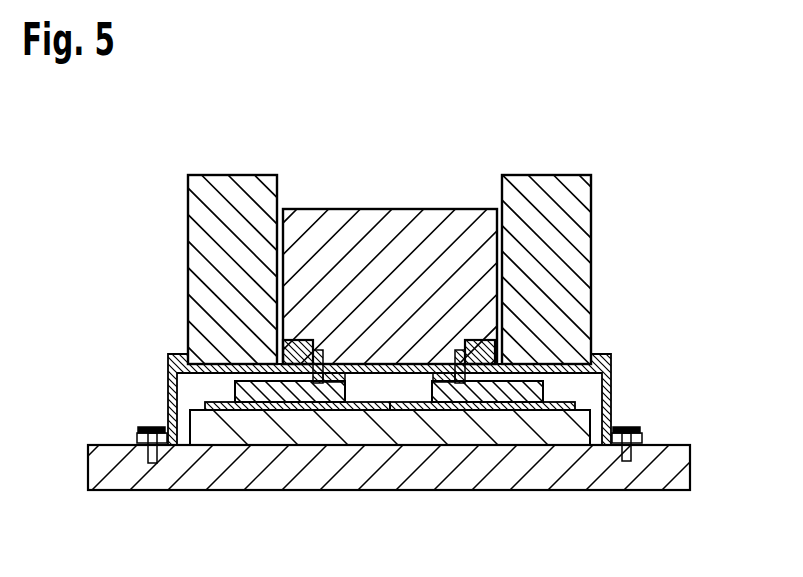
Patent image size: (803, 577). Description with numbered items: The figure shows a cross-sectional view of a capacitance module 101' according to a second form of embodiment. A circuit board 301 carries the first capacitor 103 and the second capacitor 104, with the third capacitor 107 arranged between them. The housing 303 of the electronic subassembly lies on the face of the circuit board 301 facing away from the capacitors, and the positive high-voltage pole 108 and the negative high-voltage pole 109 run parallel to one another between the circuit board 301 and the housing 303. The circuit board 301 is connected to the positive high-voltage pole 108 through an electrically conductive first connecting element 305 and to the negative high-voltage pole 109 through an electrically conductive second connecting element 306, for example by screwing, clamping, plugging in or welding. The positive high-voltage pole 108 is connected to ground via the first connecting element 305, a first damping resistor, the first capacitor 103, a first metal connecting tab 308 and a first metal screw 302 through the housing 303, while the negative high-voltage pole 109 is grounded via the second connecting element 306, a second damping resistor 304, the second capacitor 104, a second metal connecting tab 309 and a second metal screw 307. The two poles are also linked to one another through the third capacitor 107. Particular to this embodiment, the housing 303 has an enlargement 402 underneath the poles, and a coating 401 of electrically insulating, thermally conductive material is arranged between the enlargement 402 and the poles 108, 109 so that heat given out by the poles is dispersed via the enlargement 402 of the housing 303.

The capacitance module 101' is at (392, 335).
The first capacitor 103 is at (218, 188).
The second capacitor 104 is at (547, 188).
The third capacitor 107 is at (373, 222).
The positive high-voltage pole 108 is at (285, 410).
The negative high-voltage pole 109 is at (491, 405).
The circuit board 301 is at (186, 445).
The first metal screw 302 is at (139, 430).
The housing 303 is at (655, 482).
The second damping resistor 304 is at (500, 352).
The first connecting element 305 is at (316, 395).
The second connecting element 306 is at (453, 388).
The second metal screw 307 is at (640, 430).
The first metal connecting tab 308 is at (167, 377).
The second metal connecting tab 309 is at (612, 375).
The coating 401 is at (385, 410).
The enlargement 402 is at (567, 433).